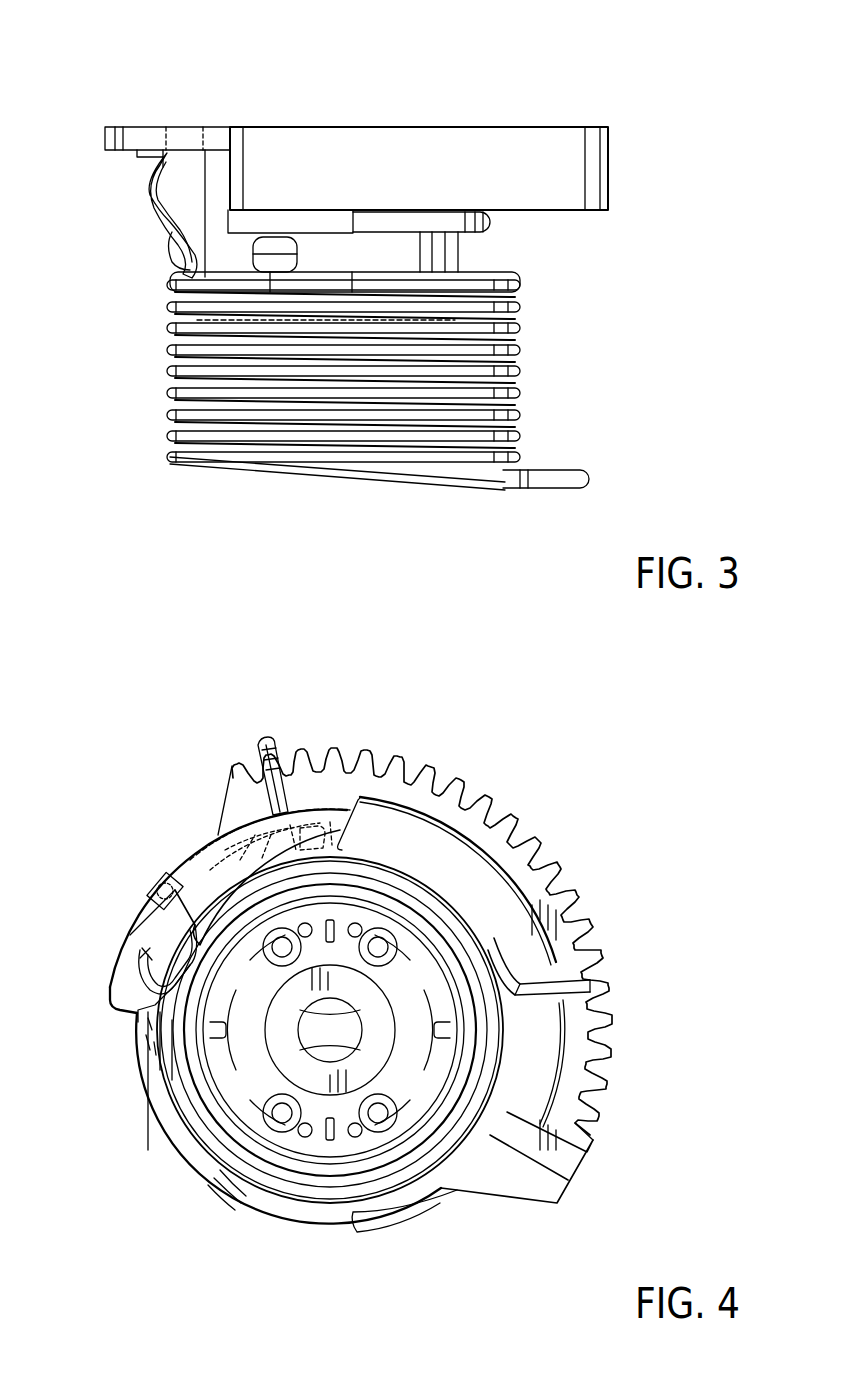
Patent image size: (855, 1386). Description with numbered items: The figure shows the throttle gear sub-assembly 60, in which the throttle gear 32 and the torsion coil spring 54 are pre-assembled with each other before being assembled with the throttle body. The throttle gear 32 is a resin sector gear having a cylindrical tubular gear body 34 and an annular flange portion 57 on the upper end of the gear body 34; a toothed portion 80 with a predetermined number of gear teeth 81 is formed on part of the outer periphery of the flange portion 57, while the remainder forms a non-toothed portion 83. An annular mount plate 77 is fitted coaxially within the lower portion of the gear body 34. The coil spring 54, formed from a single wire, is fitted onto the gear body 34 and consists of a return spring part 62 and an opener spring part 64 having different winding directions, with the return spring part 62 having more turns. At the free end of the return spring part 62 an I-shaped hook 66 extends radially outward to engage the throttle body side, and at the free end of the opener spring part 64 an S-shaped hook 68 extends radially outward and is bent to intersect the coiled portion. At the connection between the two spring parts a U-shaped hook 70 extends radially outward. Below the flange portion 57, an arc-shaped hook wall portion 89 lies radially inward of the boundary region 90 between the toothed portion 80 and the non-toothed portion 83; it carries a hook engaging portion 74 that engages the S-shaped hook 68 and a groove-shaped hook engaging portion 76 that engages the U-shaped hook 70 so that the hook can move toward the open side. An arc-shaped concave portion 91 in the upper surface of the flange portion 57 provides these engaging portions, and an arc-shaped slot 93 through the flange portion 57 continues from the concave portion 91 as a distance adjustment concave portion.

In FIG. 3, the throttle gear 32 is at (315, 118).
In FIG. 4, the throttle gear 32 is at (612, 920).
In FIG. 3, the gear body 34 is at (443, 255).
In FIG. 4, the gear body 34 is at (262, 1062).
In FIG. 3, the torsion coil spring 54 is at (128, 373).
In FIG. 4, the torsion coil spring 54 is at (195, 1158).
In FIG. 3, the flange portion 57 is at (118, 128).
In FIG. 4, the flange portion 57 is at (150, 1068).
In FIG. 3, the throttle gear sub-assembly 60 is at (487, 98).
In FIG. 4, the throttle gear sub-assembly 60 is at (606, 882).
In FIG. 3, the return spring part 62 is at (525, 344).
In FIG. 4, the return spring part 62 is at (296, 1212).
In FIG. 3, the opener spring part 64 is at (495, 222).
In FIG. 4, the opener spring part 64 is at (462, 937).
In FIG. 3, the I-shaped hook 66 is at (560, 470).
In FIG. 4, the I-shaped hook 66 is at (578, 975).
In FIG. 3, the S-shaped hook 68 is at (150, 188).
In FIG. 4, the S-shaped hook 68 is at (162, 878).
In FIG. 3, the U-shaped hook 70 is at (264, 236).
In FIG. 4, the U-shaped hook 70 is at (275, 740).
In FIG. 3, the hook engaging portion 74 is at (190, 160).
In FIG. 4, the hook engaging portion 74 is at (190, 870).
In FIG. 3, the hook engaging portion 76 is at (325, 205).
In FIG. 4, the hook engaging portion 76 is at (310, 815).
In FIG. 4, the mount plate 77 is at (300, 1026).
In FIG. 3, the toothed portion 80 is at (538, 130).
In FIG. 4, the toothed portion 80 is at (618, 1035).
In FIG. 3, the gear teeth 81 is at (598, 158).
In FIG. 4, the gear teeth 81 is at (600, 1075).
In FIG. 3, the non-toothed portion 83 is at (140, 130).
In FIG. 4, the non-toothed portion 83 is at (223, 1202).
In FIG. 3, the hook wall portion 89 is at (232, 225).
In FIG. 4, the hook wall portion 89 is at (240, 833).
In FIG. 4, the boundary region 90 is at (215, 820).
In FIG. 3, the concave portion 91 is at (193, 130).
In FIG. 4, the concave portion 91 is at (208, 850).
In FIG. 4, the slot 93 is at (142, 962).